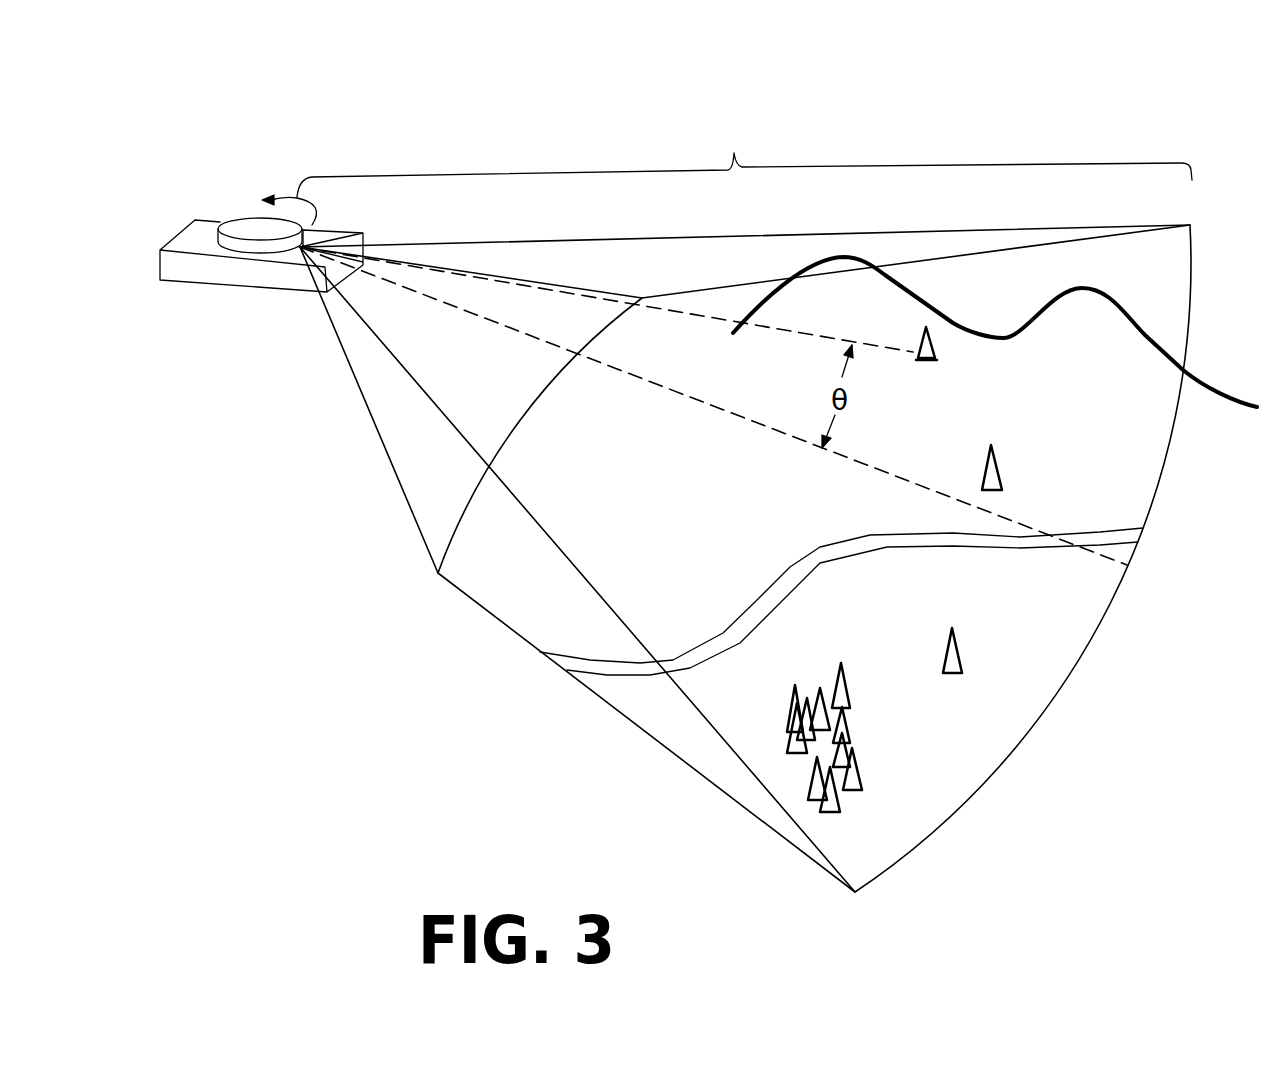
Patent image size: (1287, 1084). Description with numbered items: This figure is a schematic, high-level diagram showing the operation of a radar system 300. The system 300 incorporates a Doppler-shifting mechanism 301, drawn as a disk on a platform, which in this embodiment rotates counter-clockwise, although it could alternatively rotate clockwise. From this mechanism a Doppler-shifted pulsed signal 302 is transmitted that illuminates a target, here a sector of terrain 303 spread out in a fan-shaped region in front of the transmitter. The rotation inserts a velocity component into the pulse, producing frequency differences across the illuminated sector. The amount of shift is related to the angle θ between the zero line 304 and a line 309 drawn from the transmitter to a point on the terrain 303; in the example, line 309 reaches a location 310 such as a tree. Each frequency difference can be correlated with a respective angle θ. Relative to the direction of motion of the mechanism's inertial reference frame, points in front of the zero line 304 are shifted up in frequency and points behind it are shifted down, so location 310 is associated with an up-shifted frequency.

The system 300 is at (266, 110).
The Doppler-shifting mechanism 301 is at (252, 218).
The Doppler-shifted pulsed signal 302 is at (744, 157).
The terrain 303 is at (1113, 482).
The zero line 304 is at (870, 470).
The line 309 is at (787, 330).
The location 310 is at (926, 327).